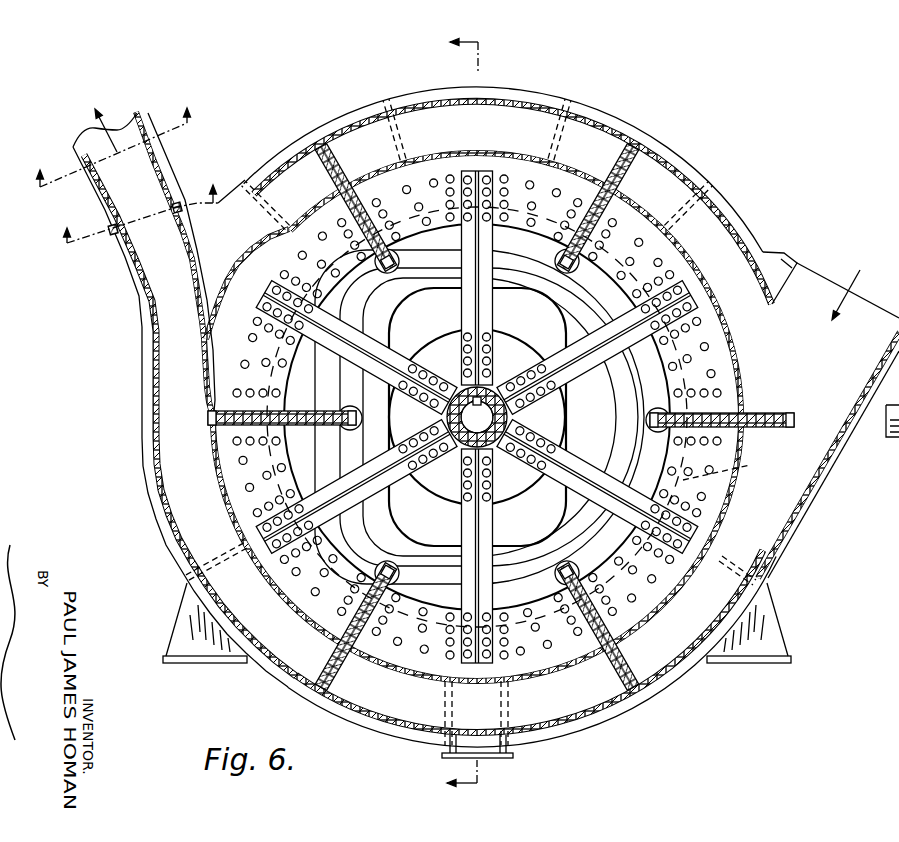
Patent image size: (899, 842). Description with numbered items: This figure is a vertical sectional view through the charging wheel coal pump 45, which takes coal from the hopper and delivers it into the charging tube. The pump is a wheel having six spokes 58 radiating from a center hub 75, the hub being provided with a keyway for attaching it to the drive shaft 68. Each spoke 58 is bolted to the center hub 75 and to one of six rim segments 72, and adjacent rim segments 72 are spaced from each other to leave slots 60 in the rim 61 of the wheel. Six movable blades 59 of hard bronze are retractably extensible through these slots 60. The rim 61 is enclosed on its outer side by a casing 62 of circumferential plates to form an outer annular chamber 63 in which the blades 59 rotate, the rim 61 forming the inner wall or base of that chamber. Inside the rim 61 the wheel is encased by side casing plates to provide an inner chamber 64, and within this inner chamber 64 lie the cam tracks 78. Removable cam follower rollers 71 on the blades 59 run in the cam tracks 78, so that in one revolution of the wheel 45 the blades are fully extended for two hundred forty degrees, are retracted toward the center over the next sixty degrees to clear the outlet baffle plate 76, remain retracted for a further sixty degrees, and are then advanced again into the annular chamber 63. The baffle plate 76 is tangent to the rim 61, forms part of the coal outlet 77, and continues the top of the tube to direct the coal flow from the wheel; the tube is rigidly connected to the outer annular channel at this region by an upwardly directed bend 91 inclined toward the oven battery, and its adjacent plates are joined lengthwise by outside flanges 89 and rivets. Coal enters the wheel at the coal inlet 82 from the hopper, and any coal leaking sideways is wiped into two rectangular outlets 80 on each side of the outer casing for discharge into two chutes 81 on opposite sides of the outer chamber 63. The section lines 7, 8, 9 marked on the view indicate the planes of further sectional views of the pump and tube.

The section line 7- 7 is at (472, 421).
The section line 8- 8 is at (134, 202).
The section line 9- 9 is at (109, 138).
The charging wheel coal pump 45 is at (454, 421).
The spokes 58 is at (482, 315).
The movable blades 59 is at (322, 143).
The slots 60 is at (385, 245).
The rim 61 is at (503, 157).
The casing 62 is at (508, 100).
The outer annular chamber 63 is at (583, 130).
The inner chamber 64 is at (600, 458).
The drive shaft 68 is at (483, 411).
The cam follower rollers 71 is at (578, 273).
The rim segments 72 is at (722, 355).
The center hub 75 is at (433, 347).
The outlet baffle plate 76 is at (195, 284).
The coal outlet 77 is at (162, 318).
The cam tracks 78 is at (622, 473).
The rectangular outlets 80 is at (485, 683).
The chutes 81 is at (520, 748).
The coal inlet 82 is at (805, 277).
The outside flanges 89 is at (112, 240).
The upwardly directed bend 91 is at (150, 359).